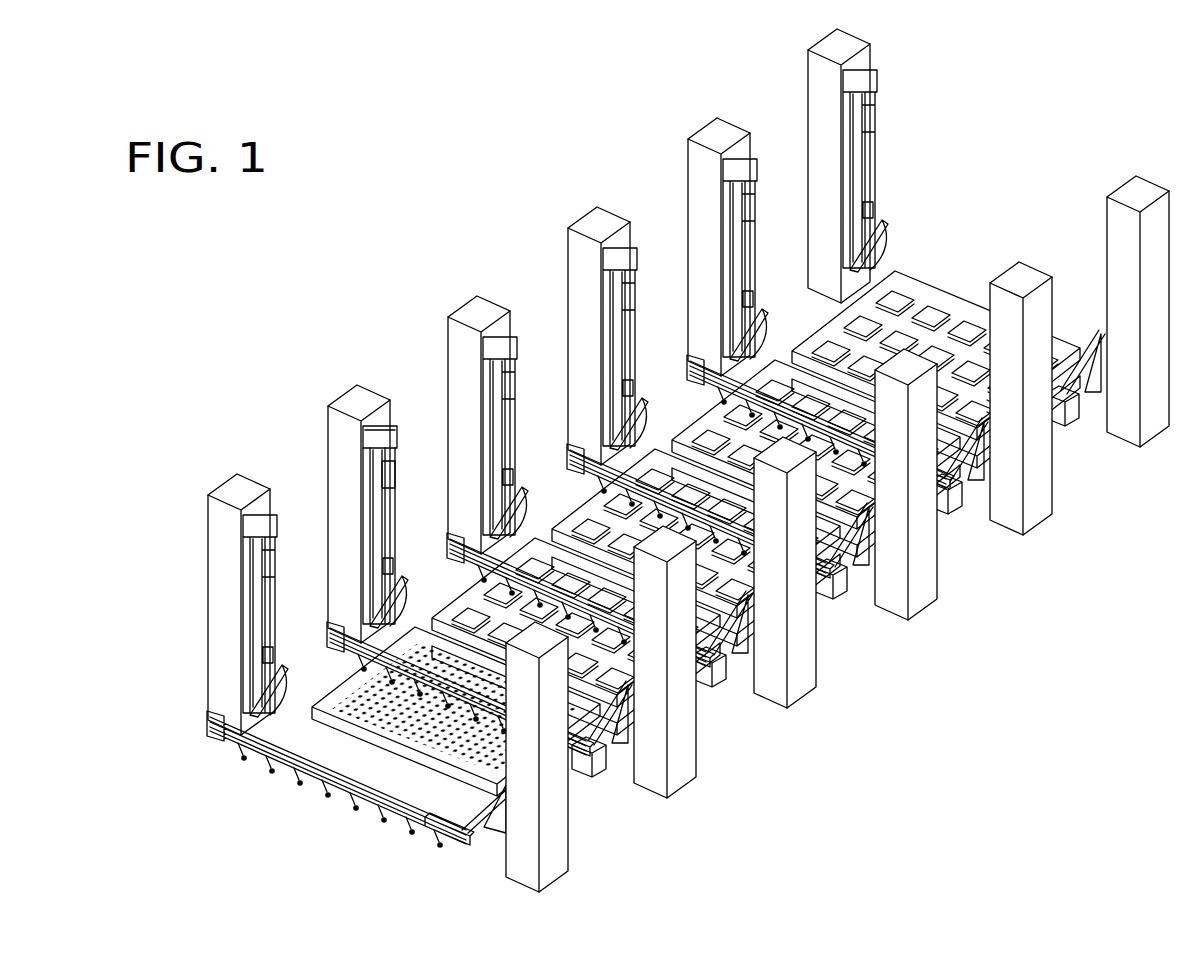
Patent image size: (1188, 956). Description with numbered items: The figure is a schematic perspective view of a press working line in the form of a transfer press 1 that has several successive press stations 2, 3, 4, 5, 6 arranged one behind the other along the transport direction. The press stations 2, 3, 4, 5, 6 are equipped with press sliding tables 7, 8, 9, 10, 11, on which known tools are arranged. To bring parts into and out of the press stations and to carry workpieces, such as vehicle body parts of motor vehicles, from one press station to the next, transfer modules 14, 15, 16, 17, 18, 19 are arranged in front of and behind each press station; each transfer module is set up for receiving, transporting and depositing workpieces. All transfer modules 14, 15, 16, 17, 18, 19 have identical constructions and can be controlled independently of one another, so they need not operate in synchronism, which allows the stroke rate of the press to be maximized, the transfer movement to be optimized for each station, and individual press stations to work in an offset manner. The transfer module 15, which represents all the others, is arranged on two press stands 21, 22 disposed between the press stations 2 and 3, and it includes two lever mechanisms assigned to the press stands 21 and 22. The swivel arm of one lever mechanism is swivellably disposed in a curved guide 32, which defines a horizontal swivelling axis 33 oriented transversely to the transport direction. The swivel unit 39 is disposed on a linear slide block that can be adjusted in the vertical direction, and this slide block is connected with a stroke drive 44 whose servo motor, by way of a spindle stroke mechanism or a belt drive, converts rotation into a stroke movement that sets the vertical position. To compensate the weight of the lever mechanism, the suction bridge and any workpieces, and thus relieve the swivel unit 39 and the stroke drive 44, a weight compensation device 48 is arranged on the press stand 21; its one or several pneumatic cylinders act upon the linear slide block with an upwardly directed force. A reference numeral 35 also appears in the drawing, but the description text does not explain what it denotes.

The transfer press 1 is at (505, 150).
The press station 2 is at (313, 630).
The press station 3 is at (446, 578).
The press station 4 is at (547, 448).
The press station 5 is at (662, 355).
The press station 6 is at (786, 276).
The press sliding table 7 is at (298, 745).
The press sliding table 8 is at (446, 618).
The press sliding table 9 is at (573, 522).
The press sliding table 10 is at (692, 434).
The press sliding table 11 is at (810, 347).
The transfer module 14 is at (326, 799).
The transfer module 15 is at (347, 757).
The transfer module 16 is at (448, 640).
The transfer module 17 is at (628, 518).
The transfer module 18 is at (750, 439).
The transfer module 19 is at (814, 383).
The press stand 21 is at (222, 492).
The press stand 22 is at (558, 858).
The curved guide 32 is at (288, 677).
The swivelling axis 33 is at (242, 789).
The nozzle tube 35 is at (458, 687).
The swivel unit 39 is at (410, 527).
The stroke drive 44 is at (413, 440).
The weight compensation device 48 is at (402, 398).